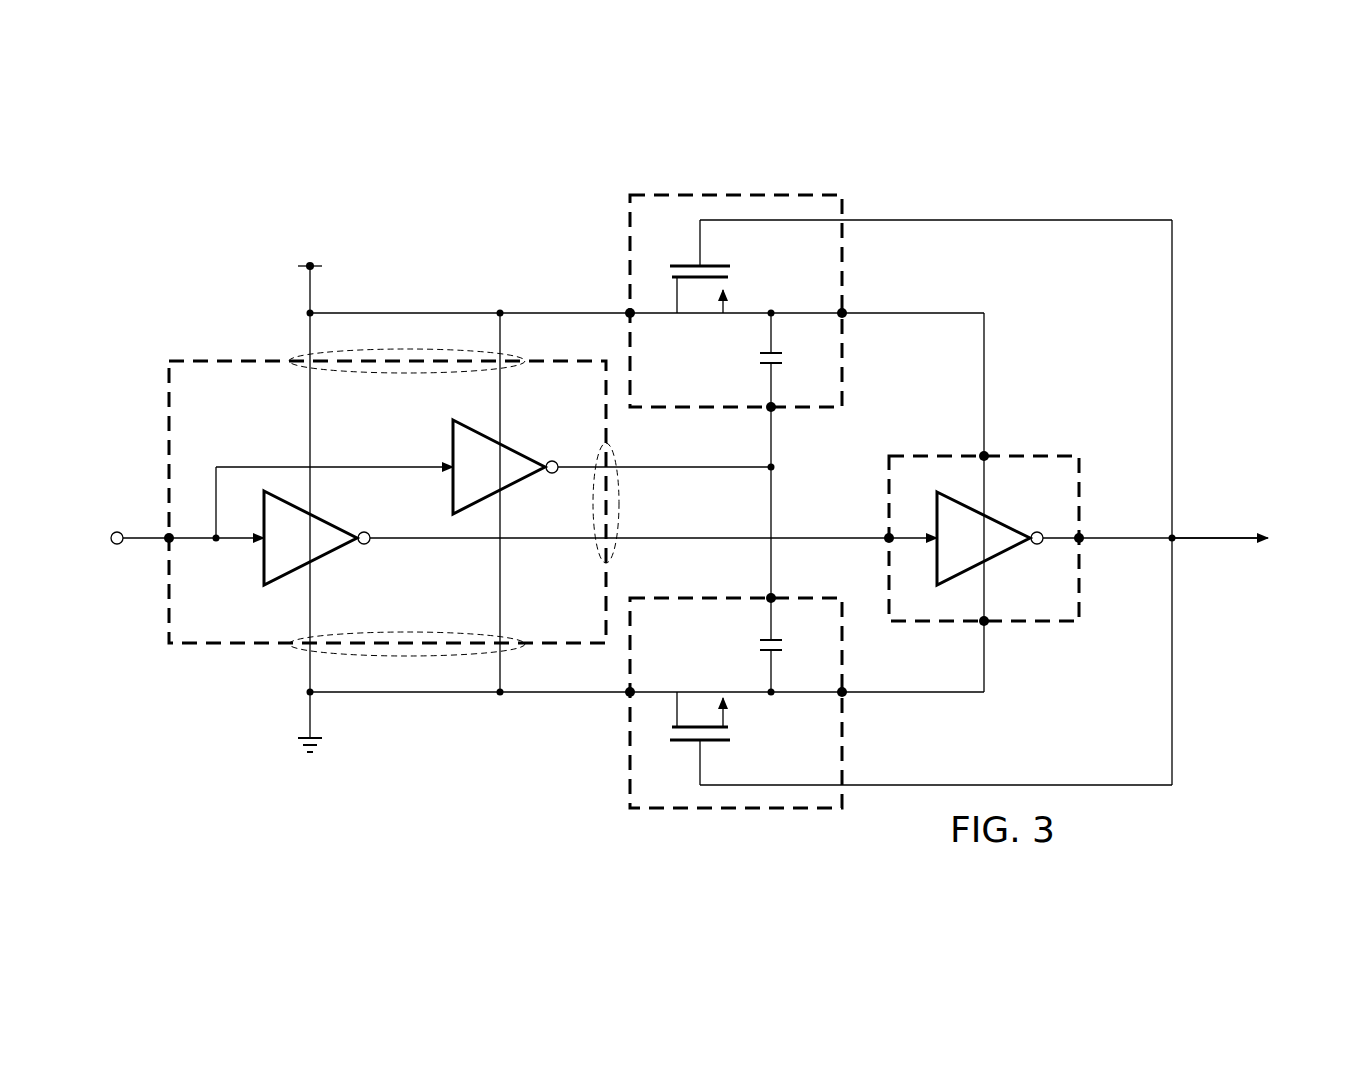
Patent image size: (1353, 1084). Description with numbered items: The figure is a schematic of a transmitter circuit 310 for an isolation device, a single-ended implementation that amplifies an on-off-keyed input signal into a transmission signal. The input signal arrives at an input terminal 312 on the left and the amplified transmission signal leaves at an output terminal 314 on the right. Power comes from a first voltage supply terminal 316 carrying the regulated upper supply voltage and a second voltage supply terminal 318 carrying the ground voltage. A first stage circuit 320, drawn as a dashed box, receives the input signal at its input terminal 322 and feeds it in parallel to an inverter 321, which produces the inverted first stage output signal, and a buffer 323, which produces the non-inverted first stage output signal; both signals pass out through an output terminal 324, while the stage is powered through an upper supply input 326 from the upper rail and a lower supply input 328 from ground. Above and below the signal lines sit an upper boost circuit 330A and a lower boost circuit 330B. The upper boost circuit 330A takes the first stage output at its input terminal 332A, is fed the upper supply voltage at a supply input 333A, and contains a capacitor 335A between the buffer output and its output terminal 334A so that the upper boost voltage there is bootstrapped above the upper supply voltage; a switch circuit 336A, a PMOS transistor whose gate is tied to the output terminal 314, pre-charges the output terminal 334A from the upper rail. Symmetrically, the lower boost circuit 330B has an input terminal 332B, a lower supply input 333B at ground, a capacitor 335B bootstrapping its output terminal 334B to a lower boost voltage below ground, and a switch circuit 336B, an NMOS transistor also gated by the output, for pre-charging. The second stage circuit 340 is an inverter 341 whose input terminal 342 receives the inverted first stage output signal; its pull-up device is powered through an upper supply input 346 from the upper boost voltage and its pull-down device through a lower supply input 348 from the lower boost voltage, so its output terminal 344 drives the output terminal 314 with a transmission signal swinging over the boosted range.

The transmitter circuit 310 is at (417, 183).
The input terminal 312 is at (117, 545).
The output terminal 314 is at (1222, 535).
The first voltage supply terminal 316 is at (308, 265).
The second voltage supply terminal 318 is at (300, 745).
The first stage circuit 320 is at (262, 360).
The inverter 321 is at (352, 525).
The input terminal 322 is at (166, 536).
The buffer 323 is at (545, 455).
The output terminal 324 is at (595, 505).
The upper supply input 326 is at (393, 373).
The lower supply input 328 is at (405, 632).
The upper boost circuit 330A is at (692, 195).
The lower boost circuit 330B is at (692, 810).
The input terminal 332A is at (780, 413).
The input terminal 332B is at (780, 592).
The supply input 333A is at (626, 310).
The lower supply input 333B is at (626, 697).
The output terminal 334A is at (850, 320).
The output terminal 334B is at (850, 697).
The capacitor 335A is at (758, 356).
The capacitor 335B is at (758, 645).
The switch circuit 336A is at (715, 263).
The switch circuit 336B is at (720, 742).
The second stage circuit 340 is at (1040, 455).
The inverter 341 is at (1035, 506).
The input terminal 342 is at (884, 534).
The output terminal 344 is at (1088, 532).
The upper supply input 346 is at (978, 452).
The lower supply input 348 is at (992, 627).